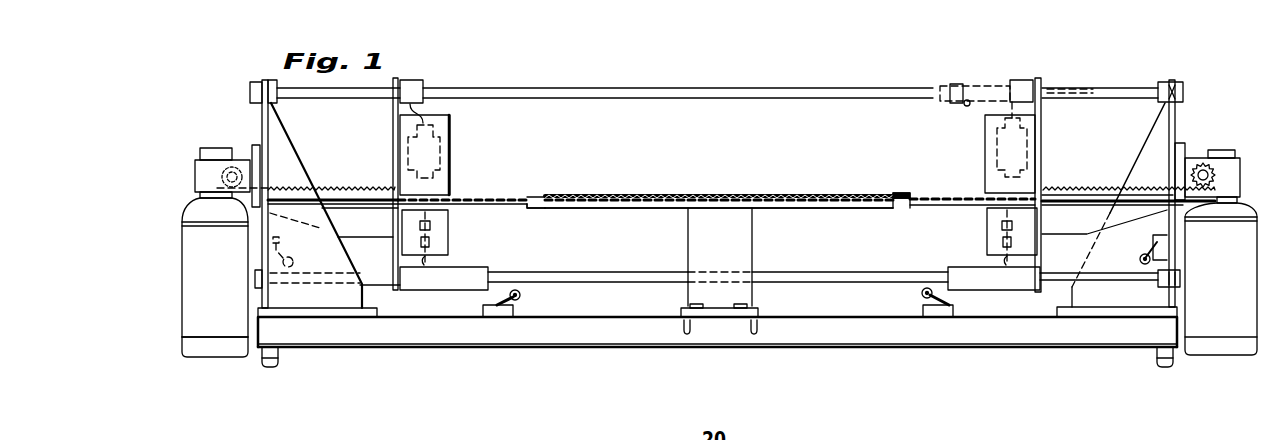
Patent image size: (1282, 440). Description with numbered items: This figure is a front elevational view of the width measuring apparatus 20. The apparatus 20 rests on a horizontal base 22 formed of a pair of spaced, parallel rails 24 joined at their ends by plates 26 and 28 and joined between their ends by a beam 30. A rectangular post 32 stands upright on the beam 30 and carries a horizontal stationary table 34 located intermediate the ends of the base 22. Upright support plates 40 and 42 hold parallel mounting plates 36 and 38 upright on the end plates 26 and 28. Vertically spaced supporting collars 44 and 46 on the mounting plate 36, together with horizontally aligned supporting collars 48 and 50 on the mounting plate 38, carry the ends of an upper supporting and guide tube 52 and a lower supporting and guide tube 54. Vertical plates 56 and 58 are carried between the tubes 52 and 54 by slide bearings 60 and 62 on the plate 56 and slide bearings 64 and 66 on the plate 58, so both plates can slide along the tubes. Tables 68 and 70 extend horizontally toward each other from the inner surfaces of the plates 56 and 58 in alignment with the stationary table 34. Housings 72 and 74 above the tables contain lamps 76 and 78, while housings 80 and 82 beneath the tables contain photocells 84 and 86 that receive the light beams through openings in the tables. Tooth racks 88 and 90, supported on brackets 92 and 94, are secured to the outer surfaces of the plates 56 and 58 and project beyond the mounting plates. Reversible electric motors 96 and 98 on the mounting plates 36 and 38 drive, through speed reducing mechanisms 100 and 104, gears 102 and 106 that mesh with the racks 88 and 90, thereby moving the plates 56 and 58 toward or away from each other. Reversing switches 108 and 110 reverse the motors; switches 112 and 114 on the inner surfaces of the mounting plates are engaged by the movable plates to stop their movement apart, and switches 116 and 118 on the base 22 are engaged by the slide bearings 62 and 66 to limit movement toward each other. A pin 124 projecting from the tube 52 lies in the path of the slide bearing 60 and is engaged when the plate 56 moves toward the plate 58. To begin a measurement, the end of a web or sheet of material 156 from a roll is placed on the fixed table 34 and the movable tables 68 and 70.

The width measuring apparatus 20 is at (667, 70).
The horizontal base 22 is at (540, 337).
The rails 24 is at (618, 333).
The end plate 26 is at (312, 317).
The end plate 28 is at (1100, 313).
The beam 30 is at (727, 317).
The rectangular post 32 is at (698, 233).
The horizontal table 34 is at (833, 206).
The mounting plate 36 is at (263, 120).
The mounting plate 38 is at (1176, 117).
The upright support plate 40 is at (286, 148).
The upright support plate 42 is at (1147, 149).
The supporting collar 44 is at (276, 82).
The supporting collar 46 is at (272, 283).
The supporting collar 48 is at (1182, 90).
The supporting collar 50 is at (1165, 278).
The supporting and guide tube 52 is at (534, 88).
The supporting and guide tube 54 is at (585, 275).
The vertical plate 56 is at (393, 132).
The vertical plate 58 is at (1040, 128).
The slide bearing 60 is at (412, 82).
The slide bearing 62 is at (435, 284).
The slide bearing 64 is at (1025, 82).
The slide bearing 66 is at (1002, 282).
The table 68 is at (513, 206).
The table 70 is at (923, 194).
The housing 72 is at (449, 137).
The housing 74 is at (994, 132).
The lamp 76 is at (436, 163).
The lamp 78 is at (1009, 163).
The housing 80 is at (446, 241).
The housing 82 is at (990, 242).
The photocell 84 is at (432, 223).
The photocell 86 is at (995, 225).
The tooth rack 88 is at (350, 188).
The tooth rack 90 is at (1075, 193).
The bracket 92 is at (365, 226).
The bracket 94 is at (1067, 223).
The reversible electric motor 96 is at (190, 240).
The reversible electric motor 98 is at (1223, 333).
The speed reducing mechanism 100 is at (200, 173).
The gear 102 is at (235, 167).
The speed reducer mechanism 104 is at (1232, 172).
The gear 106 is at (1198, 170).
The reversing switch 108 is at (210, 357).
The reversing switch 110 is at (1240, 348).
The switch 112 is at (290, 242).
The switch 114 is at (1158, 238).
The switch 116 is at (502, 312).
The switch 118 is at (937, 313).
The pin 124 is at (424, 98).
The web or sheet of material 156 is at (802, 192).